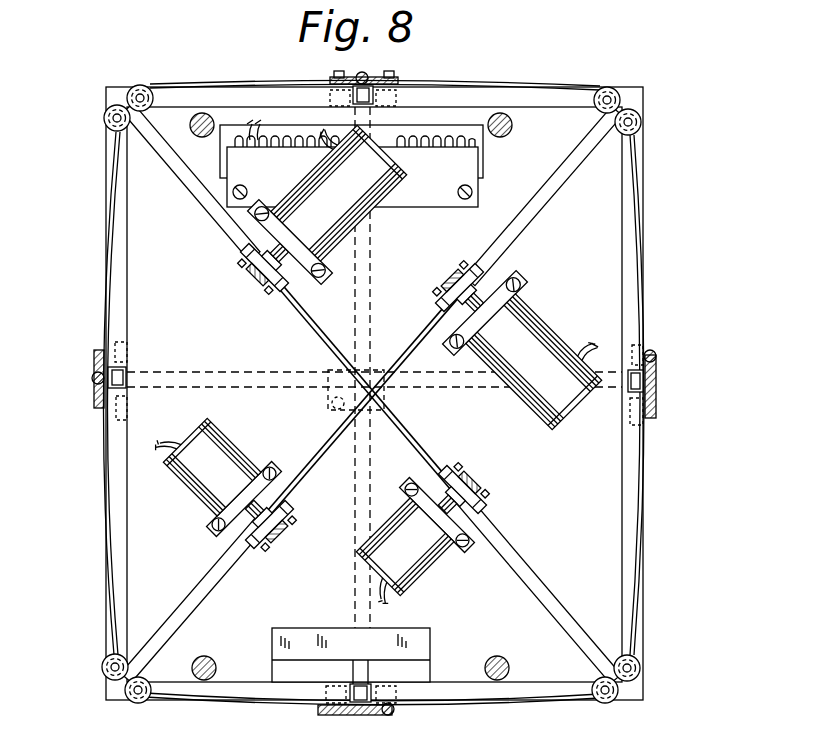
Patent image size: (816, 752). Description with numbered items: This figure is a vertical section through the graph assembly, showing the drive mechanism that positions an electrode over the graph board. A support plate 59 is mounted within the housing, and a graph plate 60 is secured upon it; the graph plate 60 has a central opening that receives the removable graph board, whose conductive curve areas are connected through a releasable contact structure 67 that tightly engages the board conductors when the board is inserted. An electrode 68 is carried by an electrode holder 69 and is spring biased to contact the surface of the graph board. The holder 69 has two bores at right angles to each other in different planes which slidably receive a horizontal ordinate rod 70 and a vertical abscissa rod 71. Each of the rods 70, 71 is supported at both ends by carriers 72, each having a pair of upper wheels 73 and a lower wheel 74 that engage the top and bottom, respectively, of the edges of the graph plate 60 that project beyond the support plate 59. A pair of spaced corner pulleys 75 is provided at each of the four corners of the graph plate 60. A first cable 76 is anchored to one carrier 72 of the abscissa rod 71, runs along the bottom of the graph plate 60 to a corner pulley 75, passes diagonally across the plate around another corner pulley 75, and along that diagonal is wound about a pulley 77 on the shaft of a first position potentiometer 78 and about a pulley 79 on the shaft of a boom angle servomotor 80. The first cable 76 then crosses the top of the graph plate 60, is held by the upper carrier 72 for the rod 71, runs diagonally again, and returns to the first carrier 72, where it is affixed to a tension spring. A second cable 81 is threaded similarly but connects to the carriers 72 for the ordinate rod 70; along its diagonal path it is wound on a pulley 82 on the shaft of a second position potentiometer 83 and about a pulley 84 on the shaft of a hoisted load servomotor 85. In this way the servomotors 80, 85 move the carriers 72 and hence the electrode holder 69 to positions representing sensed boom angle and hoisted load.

The support plate 59 is at (578, 521).
The graph plate 60 is at (644, 210).
The releasable contact structure 67 is at (456, 174).
The electrode 68 is at (330, 404).
The electrode holder 69 is at (330, 370).
The horizontal ordinate rod 70 is at (185, 371).
The vertical abscissa rod 71 is at (372, 280).
The carrier 72 is at (366, 78).
The upper wheel 73 is at (323, 86).
The lower wheel 74 is at (376, 100).
The corner pulley 75 is at (143, 85).
The first cable 76 is at (172, 108).
The pulley 77 is at (464, 493).
The first position potentiometer 78 is at (418, 557).
The pulley 79 is at (258, 272).
The boom angle servomotor 80 is at (327, 202).
The second cable 81 is at (197, 200).
The pulley 82 is at (274, 530).
The second position potentiometer 83 is at (226, 471).
The pulley 84 is at (456, 281).
The hoisted load servomotor 85 is at (548, 366).